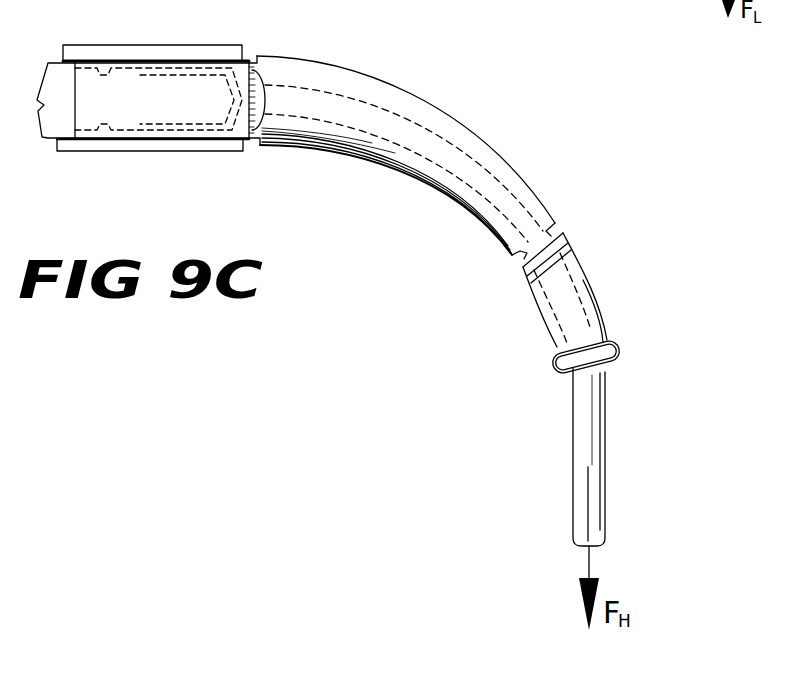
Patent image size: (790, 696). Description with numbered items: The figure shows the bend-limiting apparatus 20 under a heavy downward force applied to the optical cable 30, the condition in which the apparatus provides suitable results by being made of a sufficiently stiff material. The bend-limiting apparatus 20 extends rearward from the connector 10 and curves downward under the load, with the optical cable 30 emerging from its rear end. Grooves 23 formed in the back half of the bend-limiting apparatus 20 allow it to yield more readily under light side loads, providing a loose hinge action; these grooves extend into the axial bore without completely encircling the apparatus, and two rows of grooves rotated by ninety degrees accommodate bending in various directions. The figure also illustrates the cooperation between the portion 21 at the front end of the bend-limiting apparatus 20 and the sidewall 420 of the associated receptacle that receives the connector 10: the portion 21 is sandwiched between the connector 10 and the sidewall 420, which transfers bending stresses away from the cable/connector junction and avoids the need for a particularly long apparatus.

The connector 10 is at (48, 150).
The sidewall 420 is at (120, 50).
The portion 21 is at (247, 62).
The bend-limiting apparatus 20 is at (500, 148).
The grooves 23 is at (557, 231).
The optical cable 30 is at (611, 450).